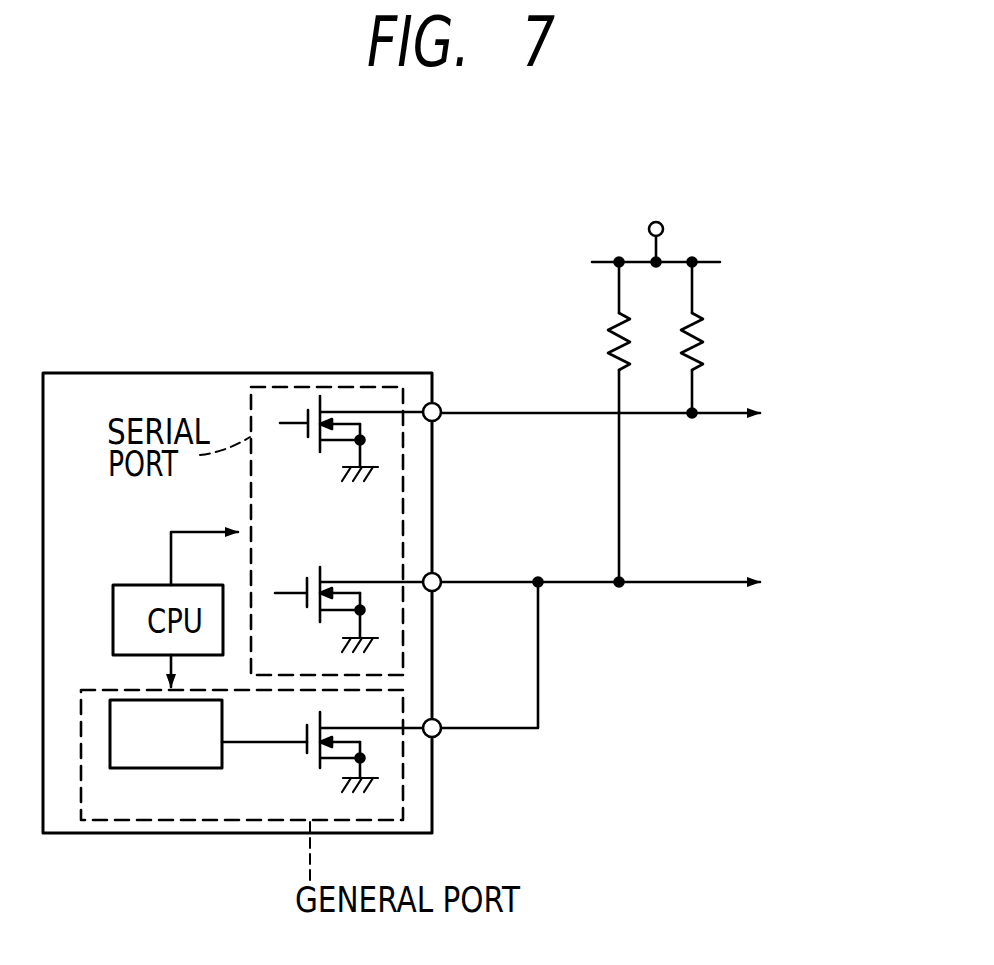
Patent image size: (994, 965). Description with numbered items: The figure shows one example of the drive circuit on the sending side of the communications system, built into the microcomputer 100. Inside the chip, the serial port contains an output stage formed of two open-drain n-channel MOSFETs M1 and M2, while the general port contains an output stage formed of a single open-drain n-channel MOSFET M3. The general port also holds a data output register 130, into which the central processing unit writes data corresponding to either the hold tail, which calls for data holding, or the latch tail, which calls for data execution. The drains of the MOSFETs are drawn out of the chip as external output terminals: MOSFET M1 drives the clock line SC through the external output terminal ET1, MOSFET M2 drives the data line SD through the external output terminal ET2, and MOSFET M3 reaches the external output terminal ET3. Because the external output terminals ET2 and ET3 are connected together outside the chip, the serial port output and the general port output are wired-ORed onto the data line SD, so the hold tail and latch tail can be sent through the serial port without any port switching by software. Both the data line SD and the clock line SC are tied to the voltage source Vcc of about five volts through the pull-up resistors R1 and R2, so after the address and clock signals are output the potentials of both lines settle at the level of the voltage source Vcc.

The microcomputer 100 is at (168, 373).
The data output register 130 is at (165, 768).
The open-drain n-channel MOSFET M1 is at (356, 444).
The open-drain n-channel MOSFET M2 is at (353, 615).
The open-drain n-channel MOSFET M3 is at (365, 763).
The pull-up resistor R1 is at (613, 327).
The pull-up resistor R2 is at (700, 330).
The external output terminal ET1 is at (437, 420).
The external output terminal ET2 is at (437, 590).
The external output terminal ET3 is at (437, 736).
The clock line SC is at (629, 415).
The data line SD is at (630, 585).
The voltage source Vcc is at (656, 225).